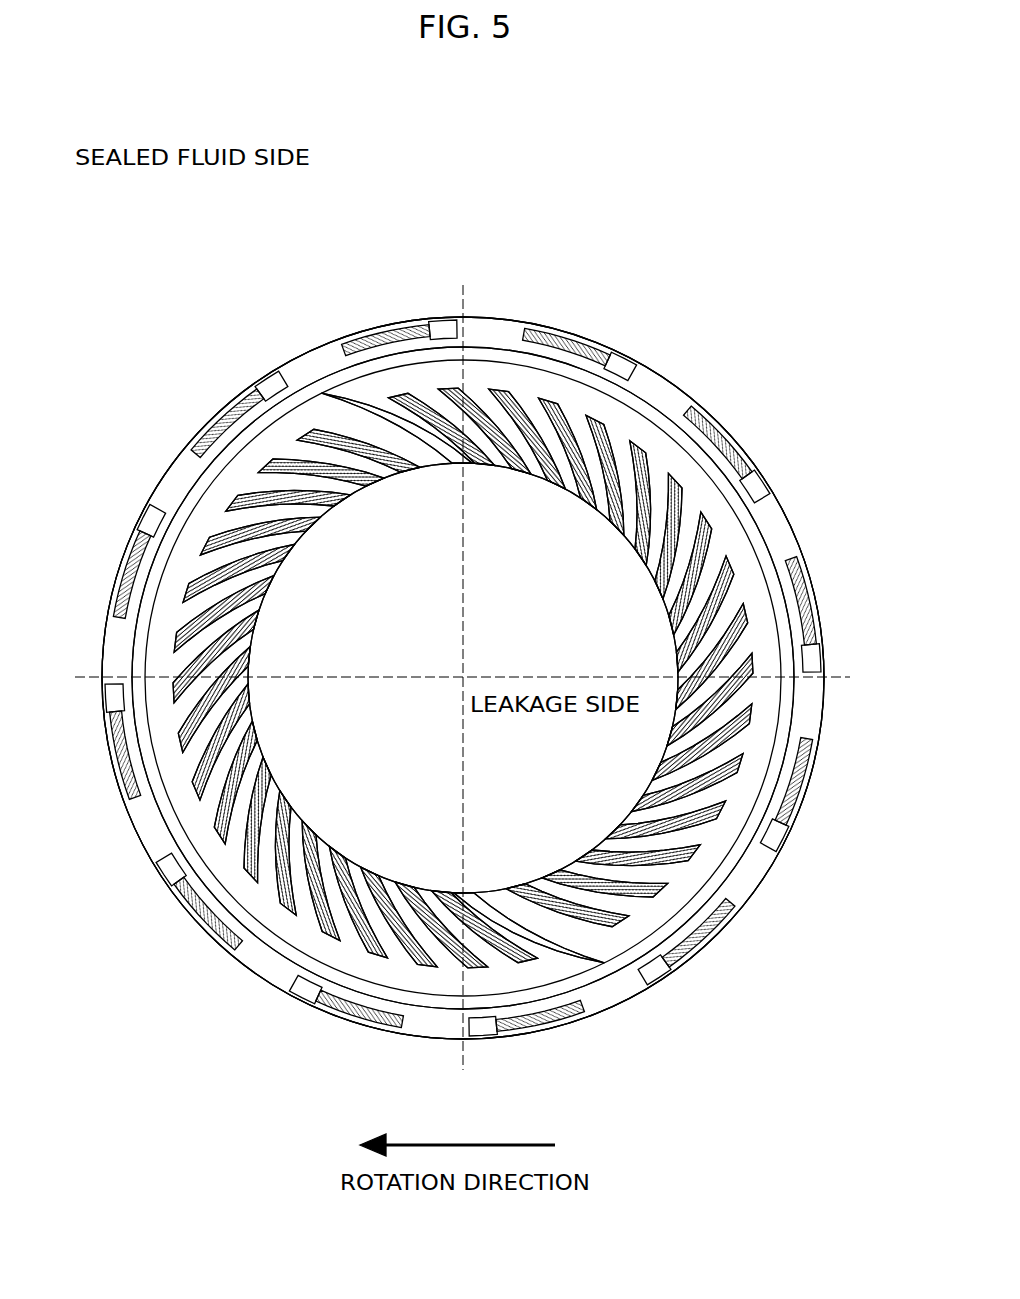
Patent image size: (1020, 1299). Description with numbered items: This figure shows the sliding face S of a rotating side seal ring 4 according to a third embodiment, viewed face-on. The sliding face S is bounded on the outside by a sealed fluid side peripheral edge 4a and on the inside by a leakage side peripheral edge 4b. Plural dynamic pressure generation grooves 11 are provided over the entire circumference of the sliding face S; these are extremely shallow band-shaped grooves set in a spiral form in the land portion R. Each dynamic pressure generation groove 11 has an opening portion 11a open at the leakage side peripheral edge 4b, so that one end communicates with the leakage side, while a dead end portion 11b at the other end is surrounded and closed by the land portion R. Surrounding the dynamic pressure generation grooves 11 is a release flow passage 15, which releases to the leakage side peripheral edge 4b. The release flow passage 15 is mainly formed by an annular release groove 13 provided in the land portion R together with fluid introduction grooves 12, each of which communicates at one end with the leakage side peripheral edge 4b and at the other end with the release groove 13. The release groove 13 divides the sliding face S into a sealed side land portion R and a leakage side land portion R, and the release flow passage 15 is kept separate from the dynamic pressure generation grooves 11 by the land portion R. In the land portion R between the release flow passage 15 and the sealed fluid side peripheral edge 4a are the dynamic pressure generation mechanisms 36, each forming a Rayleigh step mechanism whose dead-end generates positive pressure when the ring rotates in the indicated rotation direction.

The rotating side seal ring 4 is at (717, 302).
The sealed fluid side peripheral edge 4a is at (820, 603).
The leakage side peripheral edge 4b is at (590, 502).
The dynamic pressure generation groove 11 is at (470, 395).
The opening portion 11a is at (366, 497).
The dead end portion 11b is at (450, 388).
The fluid introduction groove 12 is at (343, 345).
The release groove 13 is at (392, 378).
The release flow passage 15 is at (461, 631).
The dynamic pressure generation mechanism 36 is at (601, 328).
The land portion R is at (316, 362).
The sliding face S is at (792, 500).